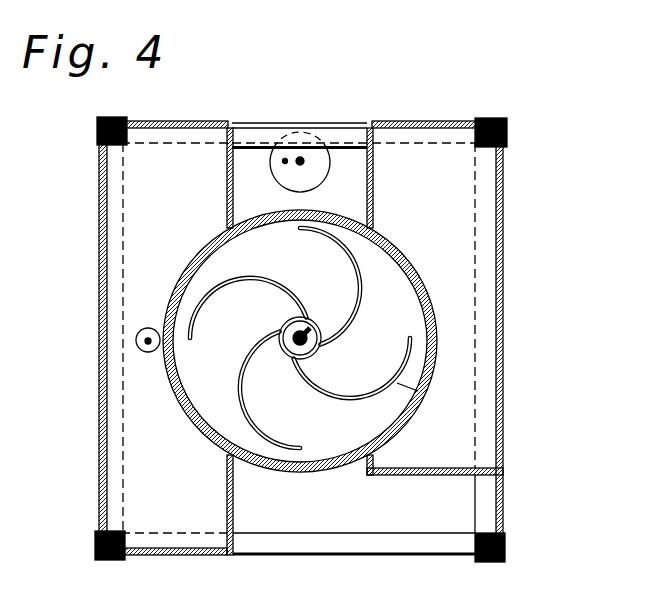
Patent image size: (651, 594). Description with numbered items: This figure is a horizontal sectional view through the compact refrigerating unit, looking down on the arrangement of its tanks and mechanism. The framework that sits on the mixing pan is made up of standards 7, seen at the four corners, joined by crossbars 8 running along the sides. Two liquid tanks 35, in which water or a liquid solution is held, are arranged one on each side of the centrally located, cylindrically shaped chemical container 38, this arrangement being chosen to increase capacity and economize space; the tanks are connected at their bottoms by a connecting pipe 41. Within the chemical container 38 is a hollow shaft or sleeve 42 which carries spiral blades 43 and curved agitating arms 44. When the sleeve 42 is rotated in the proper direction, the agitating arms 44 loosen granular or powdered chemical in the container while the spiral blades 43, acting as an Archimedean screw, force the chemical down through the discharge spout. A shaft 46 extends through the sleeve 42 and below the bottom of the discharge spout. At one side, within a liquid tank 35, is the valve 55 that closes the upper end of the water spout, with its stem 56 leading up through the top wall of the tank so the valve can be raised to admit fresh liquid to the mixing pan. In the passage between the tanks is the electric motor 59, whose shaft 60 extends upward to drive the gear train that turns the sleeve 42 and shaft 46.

The standards 7 is at (97, 131).
The crossbars 8 is at (251, 122).
The liquid tanks 35 is at (122, 223).
The chemical container 38 is at (313, 468).
The connecting pipe 41 is at (334, 133).
The hollow shaft or sleeve 42 is at (319, 346).
The spiral blades 43 is at (287, 334).
The curved agitating arms 44 is at (321, 264).
The shaft 46 is at (297, 349).
The valve 55 is at (136, 337).
The stem 56 is at (147, 343).
The electric motor 59 is at (318, 178).
The motor shaft 60 is at (297, 165).